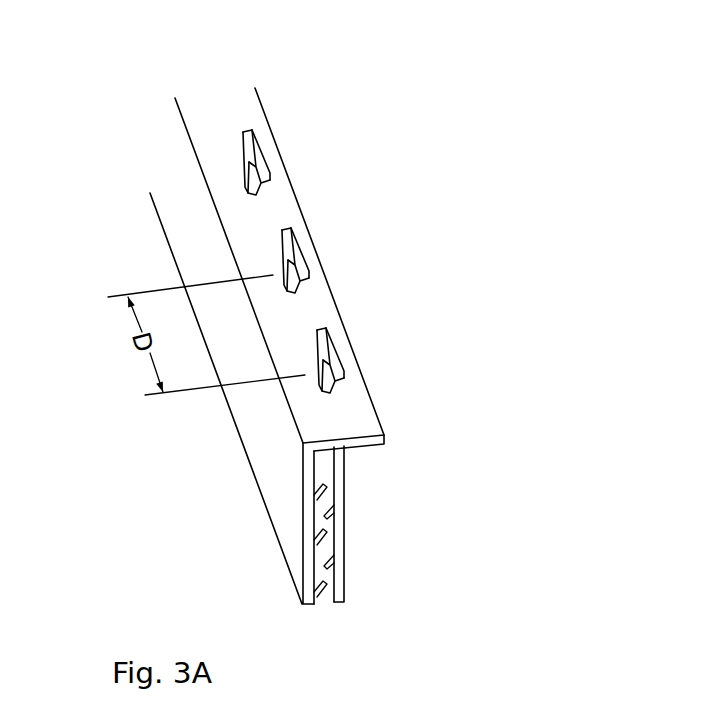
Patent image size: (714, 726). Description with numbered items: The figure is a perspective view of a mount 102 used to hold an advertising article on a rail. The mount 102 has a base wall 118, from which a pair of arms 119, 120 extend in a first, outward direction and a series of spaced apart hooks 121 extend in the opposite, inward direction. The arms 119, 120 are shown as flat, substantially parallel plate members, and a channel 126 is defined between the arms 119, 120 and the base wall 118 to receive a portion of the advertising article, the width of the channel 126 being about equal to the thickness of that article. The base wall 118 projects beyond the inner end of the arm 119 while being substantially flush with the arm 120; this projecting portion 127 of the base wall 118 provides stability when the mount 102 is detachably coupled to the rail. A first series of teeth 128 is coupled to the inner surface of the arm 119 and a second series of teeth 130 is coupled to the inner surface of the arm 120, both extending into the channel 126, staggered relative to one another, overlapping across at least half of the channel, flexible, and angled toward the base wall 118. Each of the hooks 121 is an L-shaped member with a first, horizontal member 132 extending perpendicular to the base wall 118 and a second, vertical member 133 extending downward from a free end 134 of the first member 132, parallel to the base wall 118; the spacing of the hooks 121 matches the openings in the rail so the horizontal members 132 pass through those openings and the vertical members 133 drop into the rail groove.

The mount 102 is at (308, 177).
The base wall 118 is at (350, 420).
The arm 119 is at (338, 557).
The arm 120 is at (308, 575).
The hooks 121 is at (265, 134).
The channel 126 is at (325, 605).
The portion of the base wall 127 is at (380, 445).
The first series of teeth 128 is at (330, 513).
The second series of teeth 130 is at (317, 533).
The first member 132 is at (245, 172).
The second member 133 is at (262, 146).
The free end 134 is at (245, 152).